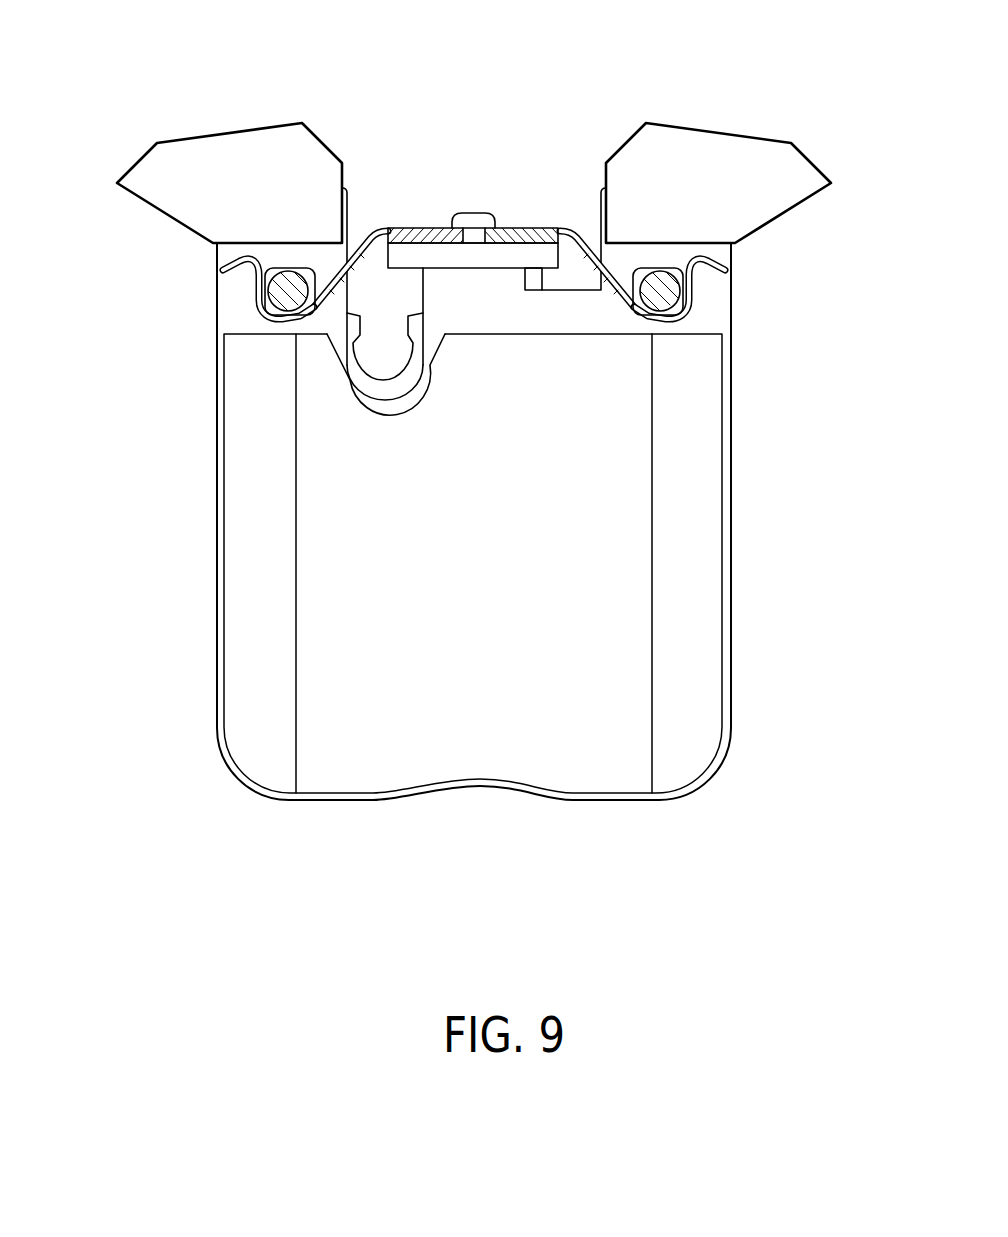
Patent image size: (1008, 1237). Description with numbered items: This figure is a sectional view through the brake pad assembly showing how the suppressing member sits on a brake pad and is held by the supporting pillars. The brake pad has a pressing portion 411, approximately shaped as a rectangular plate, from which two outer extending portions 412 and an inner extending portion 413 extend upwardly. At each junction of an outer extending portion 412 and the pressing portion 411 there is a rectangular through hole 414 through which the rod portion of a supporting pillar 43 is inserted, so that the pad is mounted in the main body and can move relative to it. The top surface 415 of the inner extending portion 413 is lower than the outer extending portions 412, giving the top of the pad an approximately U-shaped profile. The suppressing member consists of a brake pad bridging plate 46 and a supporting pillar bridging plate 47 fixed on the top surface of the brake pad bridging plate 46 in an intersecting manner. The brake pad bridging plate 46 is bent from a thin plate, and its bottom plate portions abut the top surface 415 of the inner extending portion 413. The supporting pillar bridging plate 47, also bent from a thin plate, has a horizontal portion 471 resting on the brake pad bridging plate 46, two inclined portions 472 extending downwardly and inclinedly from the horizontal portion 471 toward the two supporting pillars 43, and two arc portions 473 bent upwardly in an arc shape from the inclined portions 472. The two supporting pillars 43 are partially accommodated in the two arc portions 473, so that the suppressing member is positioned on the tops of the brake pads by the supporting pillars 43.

The pressing portion 411 is at (217, 625).
The outer extending portion 412 is at (172, 219).
The inner extending portion 413 is at (423, 293).
The through hole 414 is at (257, 305).
The top surface 415 is at (440, 267).
The supporting pillar 43 is at (288, 283).
The brake pad bridging plate 46 is at (543, 270).
The supporting pillar bridging plate 47 is at (473, 218).
The horizontal portion 471 is at (530, 232).
The inclined portion 472 is at (334, 268).
The arc portion 473 is at (287, 318).